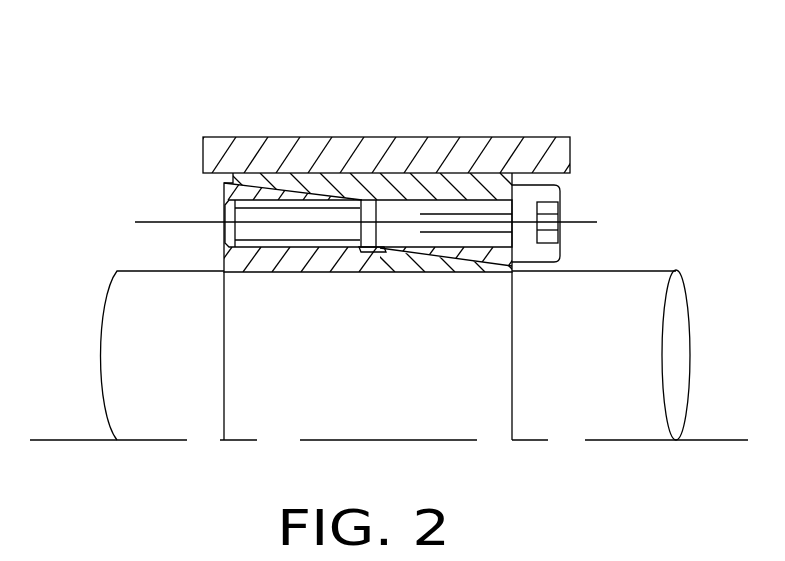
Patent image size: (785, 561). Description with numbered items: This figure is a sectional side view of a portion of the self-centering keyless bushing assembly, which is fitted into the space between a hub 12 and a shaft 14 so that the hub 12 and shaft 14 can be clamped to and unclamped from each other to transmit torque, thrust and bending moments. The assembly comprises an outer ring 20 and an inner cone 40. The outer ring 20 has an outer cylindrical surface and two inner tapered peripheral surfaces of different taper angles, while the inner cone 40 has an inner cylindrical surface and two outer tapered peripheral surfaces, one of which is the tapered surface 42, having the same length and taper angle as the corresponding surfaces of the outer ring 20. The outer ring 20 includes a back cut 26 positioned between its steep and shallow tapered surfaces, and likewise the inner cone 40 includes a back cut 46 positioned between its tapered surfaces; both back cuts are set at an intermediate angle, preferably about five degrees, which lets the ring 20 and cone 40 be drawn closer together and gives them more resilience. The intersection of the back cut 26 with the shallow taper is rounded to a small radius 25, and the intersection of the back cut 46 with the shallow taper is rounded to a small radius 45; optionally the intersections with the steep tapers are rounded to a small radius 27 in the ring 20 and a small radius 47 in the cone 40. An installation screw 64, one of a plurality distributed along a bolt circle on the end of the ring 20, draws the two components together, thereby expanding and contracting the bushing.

The hub 12 is at (373, 98).
The shaft 14 is at (405, 320).
The outer ring 20 is at (407, 131).
The small radius 25 is at (486, 152).
The back cut 26 is at (445, 117).
The small radius 27 is at (321, 111).
The inner cone 40 is at (305, 222).
The outer tapered peripheral surface 42 is at (302, 186).
The small radius 45 is at (375, 134).
The back cut 46 is at (322, 148).
The small radius 47 is at (328, 148).
The installation screw 64 is at (608, 227).